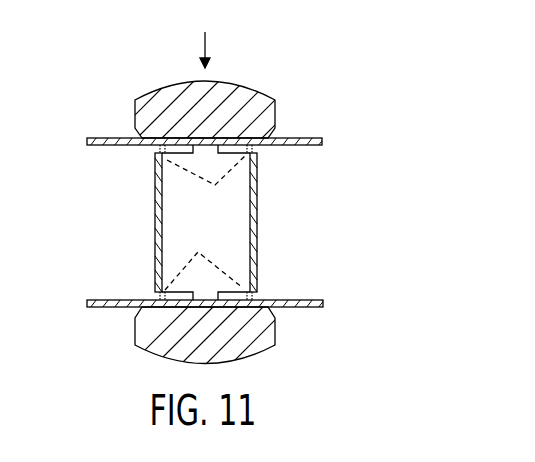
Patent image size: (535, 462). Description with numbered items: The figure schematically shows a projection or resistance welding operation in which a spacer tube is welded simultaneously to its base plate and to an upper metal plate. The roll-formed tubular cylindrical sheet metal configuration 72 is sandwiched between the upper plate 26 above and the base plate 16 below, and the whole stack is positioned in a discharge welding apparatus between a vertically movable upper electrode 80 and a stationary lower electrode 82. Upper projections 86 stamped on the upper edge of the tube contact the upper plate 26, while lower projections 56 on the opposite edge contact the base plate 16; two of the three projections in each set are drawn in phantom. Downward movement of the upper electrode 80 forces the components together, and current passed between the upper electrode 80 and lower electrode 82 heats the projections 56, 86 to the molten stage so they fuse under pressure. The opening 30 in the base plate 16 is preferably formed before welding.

The base plate 16 is at (110, 301).
The upper plate 26 is at (295, 146).
The opening 30 is at (212, 306).
The lower projections 56 is at (205, 300).
The tubular cylindrical sheet metal configuration 72 is at (257, 218).
The upper electrode 80 is at (243, 100).
The lower electrode 82 is at (157, 347).
The upper projections 86 is at (202, 152).